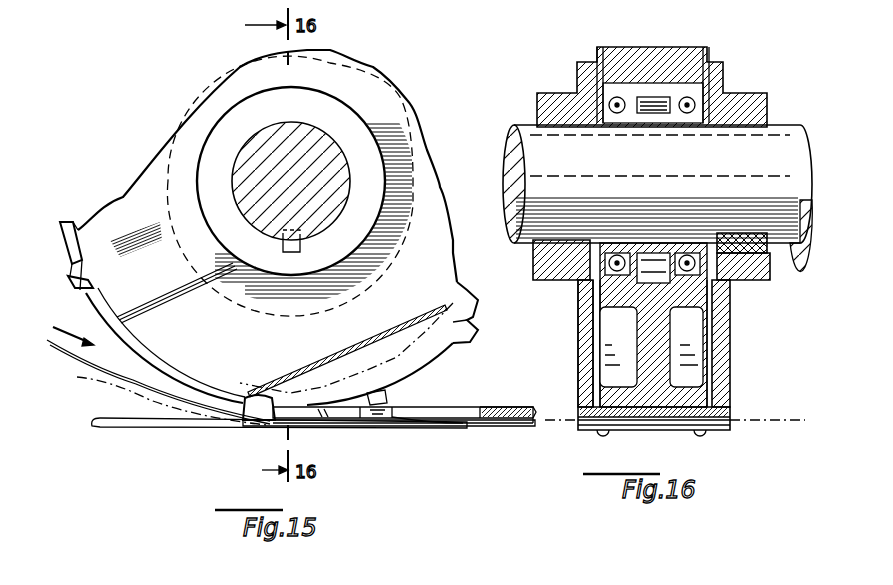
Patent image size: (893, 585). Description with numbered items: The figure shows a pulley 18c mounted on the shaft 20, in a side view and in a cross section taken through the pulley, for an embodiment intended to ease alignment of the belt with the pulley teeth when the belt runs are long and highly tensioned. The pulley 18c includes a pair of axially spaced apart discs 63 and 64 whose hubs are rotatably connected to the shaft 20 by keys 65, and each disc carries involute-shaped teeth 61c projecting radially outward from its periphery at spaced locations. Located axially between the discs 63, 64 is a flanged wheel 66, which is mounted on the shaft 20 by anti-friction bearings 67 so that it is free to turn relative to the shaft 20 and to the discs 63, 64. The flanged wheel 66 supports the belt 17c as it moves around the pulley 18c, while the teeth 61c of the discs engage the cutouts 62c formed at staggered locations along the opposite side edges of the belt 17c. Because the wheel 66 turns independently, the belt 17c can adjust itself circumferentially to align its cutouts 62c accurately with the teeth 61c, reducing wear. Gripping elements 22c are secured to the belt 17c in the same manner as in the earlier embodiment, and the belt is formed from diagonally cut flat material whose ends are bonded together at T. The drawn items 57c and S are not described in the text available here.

In FIG. 15, the shaft 20 is at (317, 147).
In FIG. 16, the shaft 20 is at (770, 135).
In FIG. 15, the pulley 18c is at (444, 202).
In FIG. 16, the pulley 18c is at (574, 300).
In FIG. 15, the disc 64 is at (440, 244).
In FIG. 16, the disc 64 is at (722, 342).
In FIG. 15, the key 65 is at (300, 245).
In FIG. 16, the key 65 is at (545, 250).
In FIG. 15, the tooth 61c is at (470, 330).
In FIG. 15, the bonded joint T is at (437, 408).
In FIG. 15, the belt 17c is at (523, 406).
In FIG. 16, the belt 17c is at (648, 420).
In FIG. 15, the cutout 62c is at (493, 424).
In FIG. 15, the strip 57c is at (334, 426).
In FIG. 16, the strip 57c is at (585, 425).
In FIG. 15, the gripping element 22c is at (220, 431).
In FIG. 15, the sheet S is at (158, 376).
In FIG. 16, the sheet S is at (780, 412).
In FIG. 16, the anti-friction bearing 67 is at (688, 112).
In FIG. 16, the disc 63 is at (587, 368).
In FIG. 16, the flanged wheel 66 is at (655, 350).